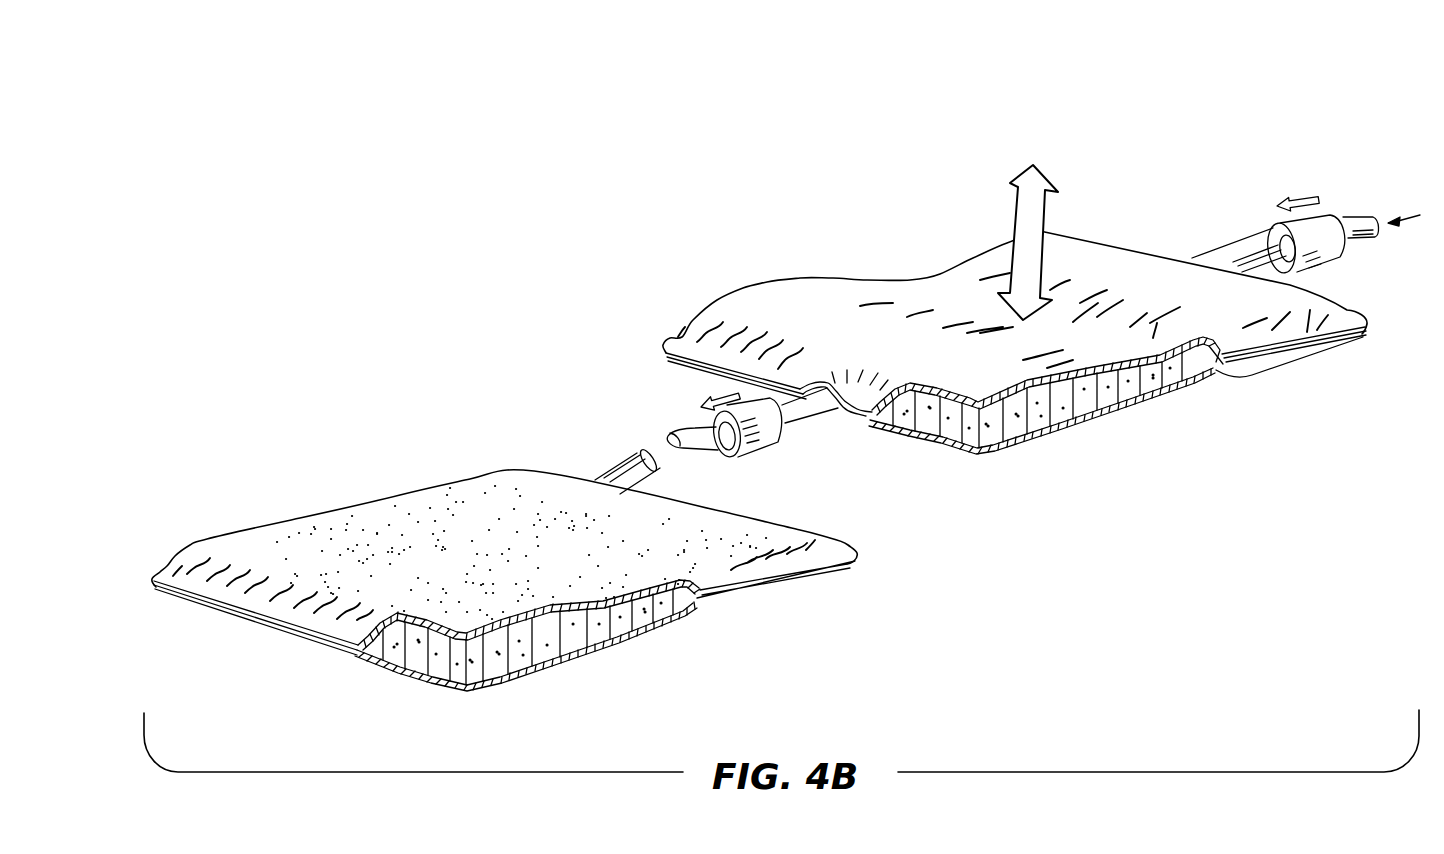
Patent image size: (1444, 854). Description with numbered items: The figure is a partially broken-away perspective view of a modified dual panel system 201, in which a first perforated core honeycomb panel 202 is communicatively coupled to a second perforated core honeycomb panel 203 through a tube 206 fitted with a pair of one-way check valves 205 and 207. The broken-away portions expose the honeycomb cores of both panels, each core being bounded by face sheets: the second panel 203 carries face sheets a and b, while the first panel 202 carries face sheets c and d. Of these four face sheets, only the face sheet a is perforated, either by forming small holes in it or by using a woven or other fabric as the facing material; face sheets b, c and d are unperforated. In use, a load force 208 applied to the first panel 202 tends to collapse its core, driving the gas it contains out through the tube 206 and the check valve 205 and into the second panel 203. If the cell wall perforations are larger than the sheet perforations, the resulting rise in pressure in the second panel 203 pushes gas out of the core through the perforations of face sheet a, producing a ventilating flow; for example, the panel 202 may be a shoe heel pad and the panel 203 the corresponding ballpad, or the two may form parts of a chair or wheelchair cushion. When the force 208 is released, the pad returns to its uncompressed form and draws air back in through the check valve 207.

The dual panel system modification 201 is at (786, 433).
The first perforated core honeycomb panel 202 is at (1015, 373).
The second perforated core honeycomb panel 203 is at (504, 593).
The one-way check valve 205 is at (751, 446).
The tube 206 is at (693, 432).
The one-way check valve 207 is at (1337, 263).
The force 208 is at (1042, 183).
The face sheet a is at (357, 520).
The face sheet b is at (773, 587).
The face sheet c is at (823, 287).
The face sheet d is at (1283, 353).